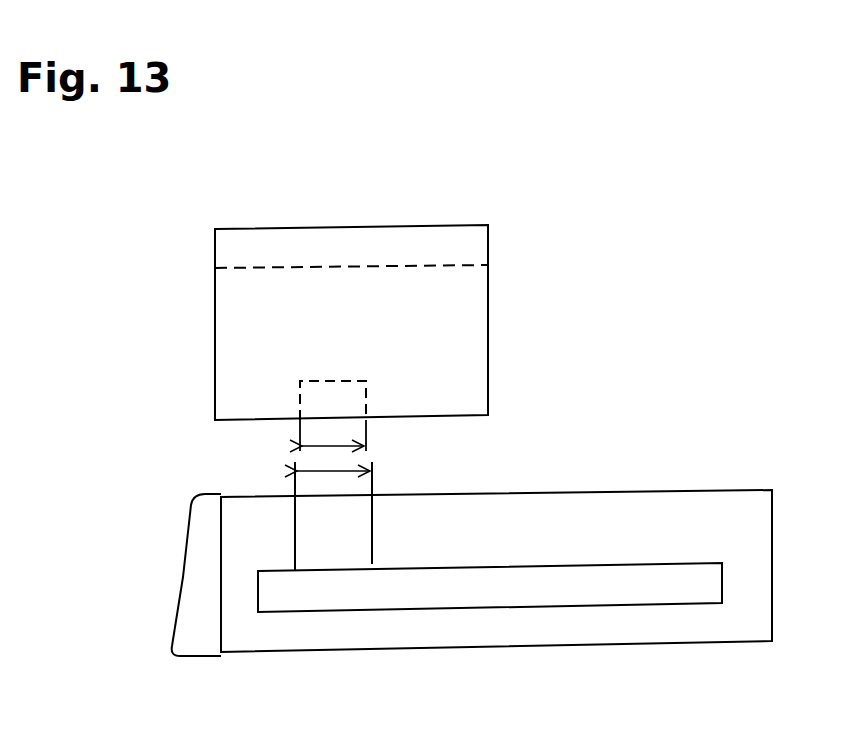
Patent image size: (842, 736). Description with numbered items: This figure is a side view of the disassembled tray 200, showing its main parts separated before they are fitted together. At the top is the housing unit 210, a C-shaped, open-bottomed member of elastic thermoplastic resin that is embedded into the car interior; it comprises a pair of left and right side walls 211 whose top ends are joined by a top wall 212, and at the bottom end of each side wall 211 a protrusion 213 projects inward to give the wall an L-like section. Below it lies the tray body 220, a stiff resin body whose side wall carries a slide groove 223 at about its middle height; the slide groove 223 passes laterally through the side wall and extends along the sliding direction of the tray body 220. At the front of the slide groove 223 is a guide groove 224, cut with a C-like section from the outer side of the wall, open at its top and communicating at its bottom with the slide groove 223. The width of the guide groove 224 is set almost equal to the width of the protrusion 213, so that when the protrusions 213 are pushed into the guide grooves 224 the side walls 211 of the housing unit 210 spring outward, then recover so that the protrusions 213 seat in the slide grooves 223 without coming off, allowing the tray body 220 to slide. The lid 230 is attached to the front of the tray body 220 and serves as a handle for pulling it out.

The tray 200 is at (259, 83).
The housing unit 210 is at (222, 200).
The side walls 211 is at (472, 336).
The top wall 212 is at (452, 242).
The protrusions 213 is at (303, 398).
The tray body 220 is at (708, 472).
The slide groove 223 is at (580, 591).
The guide grooves 224 is at (333, 555).
The lid 230 is at (180, 620).